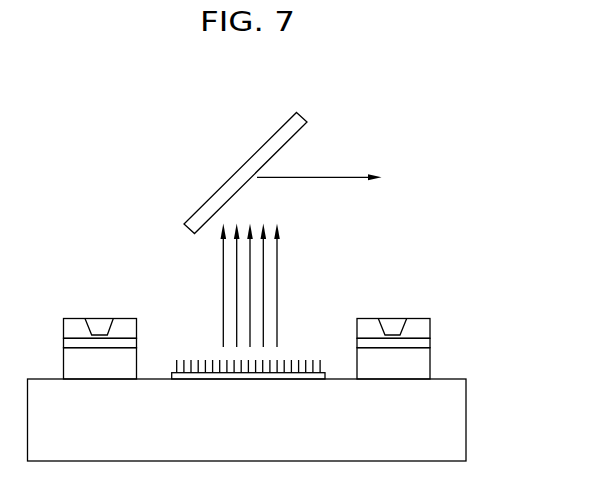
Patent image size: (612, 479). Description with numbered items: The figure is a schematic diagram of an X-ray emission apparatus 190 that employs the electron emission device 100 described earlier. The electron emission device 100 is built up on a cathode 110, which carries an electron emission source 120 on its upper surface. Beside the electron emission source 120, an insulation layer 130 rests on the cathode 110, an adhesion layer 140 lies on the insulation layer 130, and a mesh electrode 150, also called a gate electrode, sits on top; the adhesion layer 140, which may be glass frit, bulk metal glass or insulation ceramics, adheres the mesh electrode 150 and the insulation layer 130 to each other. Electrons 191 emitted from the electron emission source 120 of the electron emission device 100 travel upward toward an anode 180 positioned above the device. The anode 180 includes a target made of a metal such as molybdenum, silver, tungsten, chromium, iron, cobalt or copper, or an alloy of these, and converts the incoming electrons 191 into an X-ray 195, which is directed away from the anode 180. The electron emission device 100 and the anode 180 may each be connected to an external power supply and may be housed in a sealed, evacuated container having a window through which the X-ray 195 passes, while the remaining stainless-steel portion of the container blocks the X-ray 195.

The electron emission device 100 is at (494, 388).
The cathode 110 is at (463, 418).
The electron emission source 120 is at (330, 371).
The insulation layer 130 is at (427, 360).
The adhesion layer 140 is at (427, 343).
The mesh electrode 150 is at (427, 324).
The anode 180 is at (232, 182).
The X-ray emission apparatus 190 is at (446, 146).
The electrons 191 is at (221, 272).
The X-ray 195 is at (345, 173).